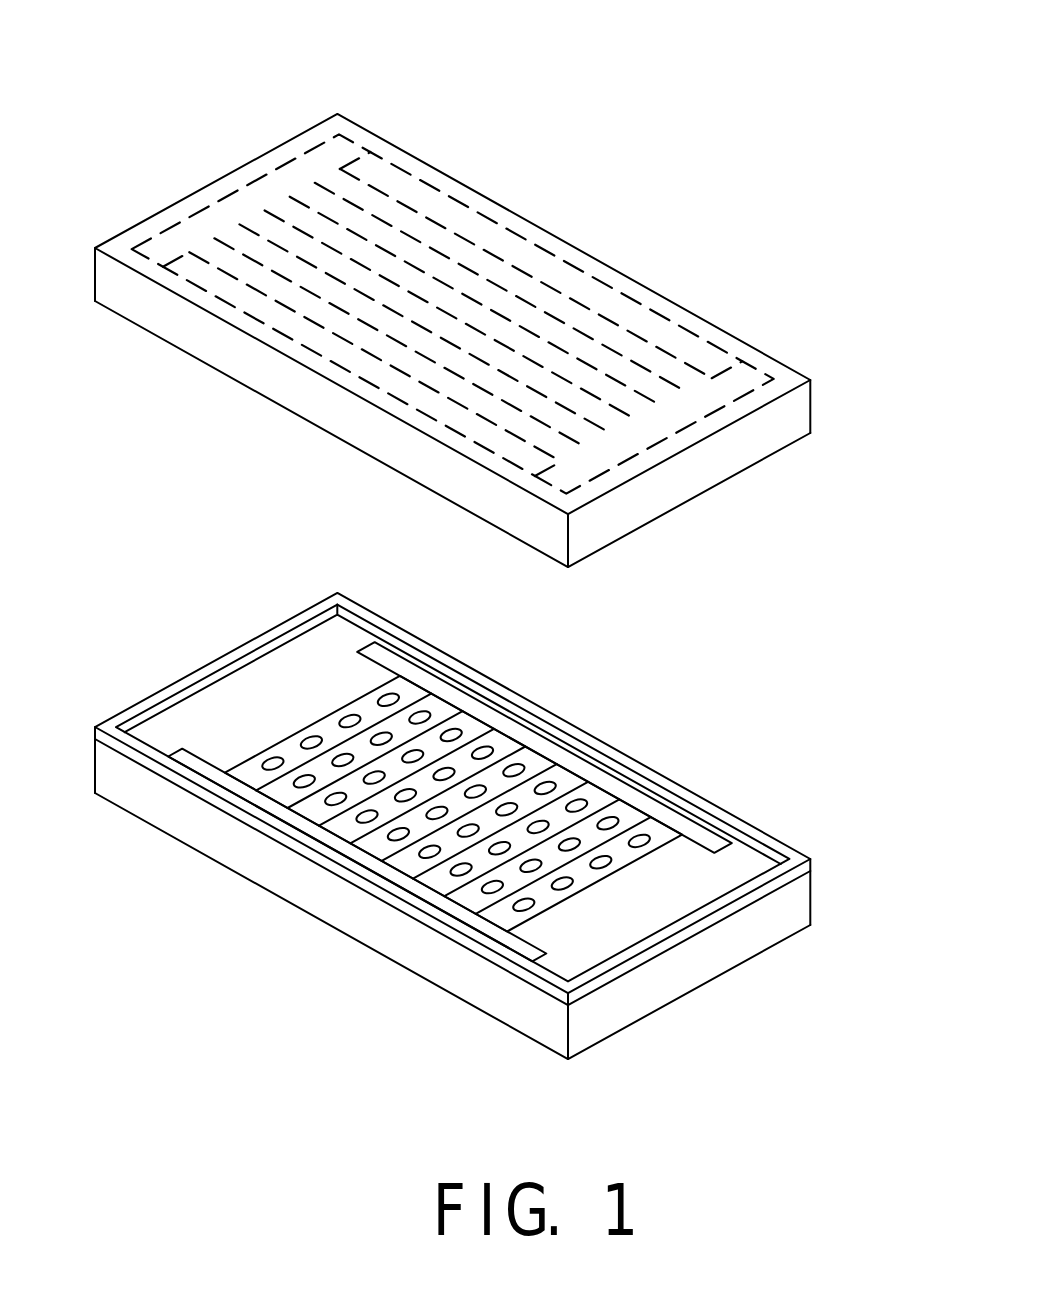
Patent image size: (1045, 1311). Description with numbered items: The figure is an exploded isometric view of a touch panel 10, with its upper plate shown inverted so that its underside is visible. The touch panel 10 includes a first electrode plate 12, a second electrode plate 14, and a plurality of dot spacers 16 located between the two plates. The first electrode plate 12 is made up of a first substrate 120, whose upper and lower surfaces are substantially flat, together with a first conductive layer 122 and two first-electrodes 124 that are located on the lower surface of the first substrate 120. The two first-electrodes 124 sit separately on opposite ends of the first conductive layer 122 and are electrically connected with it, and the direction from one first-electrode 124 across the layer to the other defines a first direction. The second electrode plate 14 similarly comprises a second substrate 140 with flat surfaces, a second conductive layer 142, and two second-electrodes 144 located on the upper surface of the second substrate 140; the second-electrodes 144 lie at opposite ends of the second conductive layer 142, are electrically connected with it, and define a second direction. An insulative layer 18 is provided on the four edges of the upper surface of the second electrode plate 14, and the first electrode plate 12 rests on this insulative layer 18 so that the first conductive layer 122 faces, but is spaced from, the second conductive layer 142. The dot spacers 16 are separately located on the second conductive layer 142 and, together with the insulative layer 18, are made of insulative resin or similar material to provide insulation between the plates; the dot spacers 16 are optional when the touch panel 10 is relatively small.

The touch panel 10 is at (431, 34).
The first electrode plate 12 is at (699, 284).
The first substrate 120 is at (787, 412).
The first conductive layer 122 is at (464, 252).
The first-electrodes 124 is at (256, 190).
The second electrode plate 14 is at (676, 1029).
The second substrate 140 is at (410, 951).
The second conductive layer 142 is at (311, 723).
The second-electrodes 144 is at (513, 730).
The dot spacers 16 is at (642, 838).
The insulative layer 18 is at (310, 855).